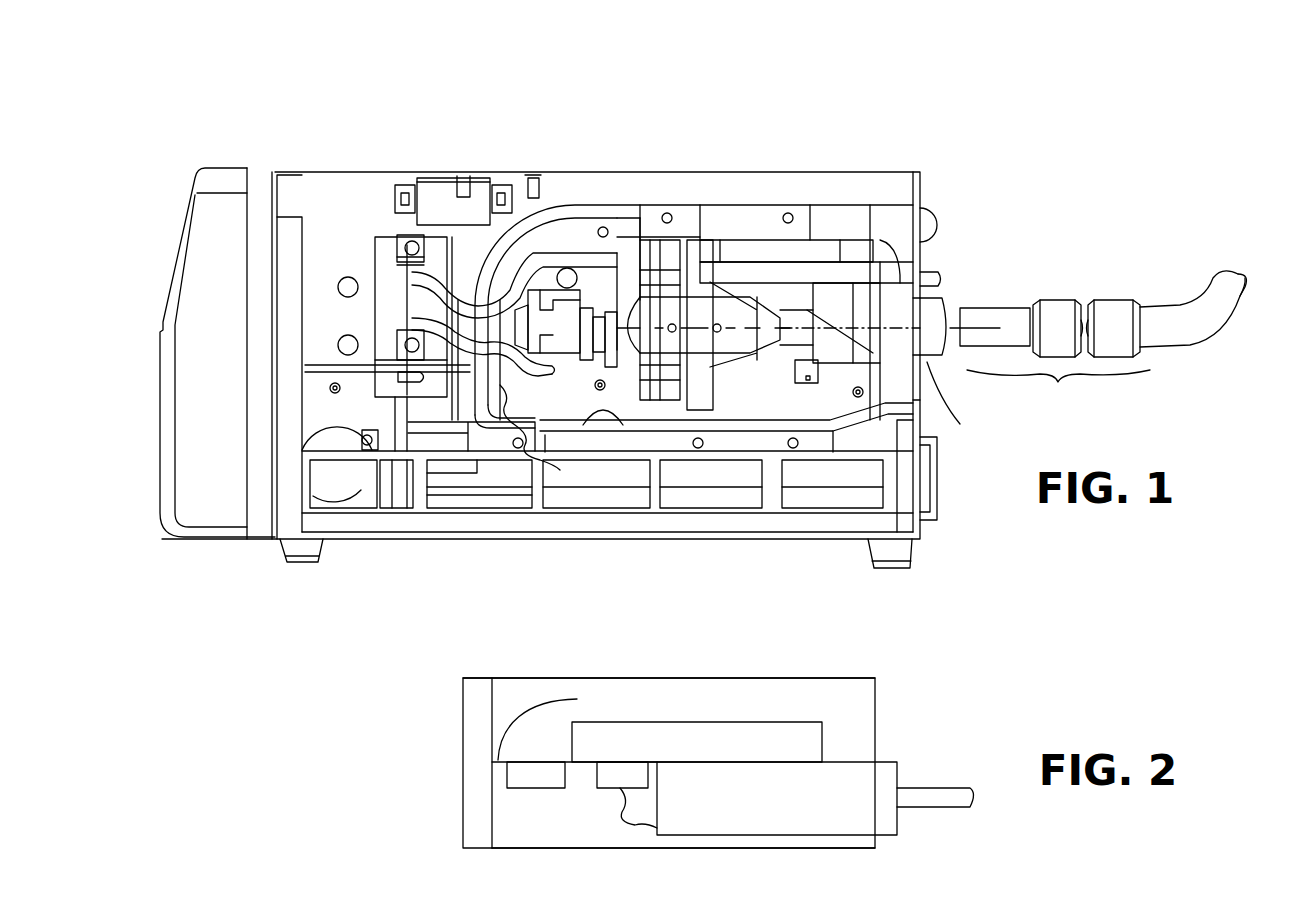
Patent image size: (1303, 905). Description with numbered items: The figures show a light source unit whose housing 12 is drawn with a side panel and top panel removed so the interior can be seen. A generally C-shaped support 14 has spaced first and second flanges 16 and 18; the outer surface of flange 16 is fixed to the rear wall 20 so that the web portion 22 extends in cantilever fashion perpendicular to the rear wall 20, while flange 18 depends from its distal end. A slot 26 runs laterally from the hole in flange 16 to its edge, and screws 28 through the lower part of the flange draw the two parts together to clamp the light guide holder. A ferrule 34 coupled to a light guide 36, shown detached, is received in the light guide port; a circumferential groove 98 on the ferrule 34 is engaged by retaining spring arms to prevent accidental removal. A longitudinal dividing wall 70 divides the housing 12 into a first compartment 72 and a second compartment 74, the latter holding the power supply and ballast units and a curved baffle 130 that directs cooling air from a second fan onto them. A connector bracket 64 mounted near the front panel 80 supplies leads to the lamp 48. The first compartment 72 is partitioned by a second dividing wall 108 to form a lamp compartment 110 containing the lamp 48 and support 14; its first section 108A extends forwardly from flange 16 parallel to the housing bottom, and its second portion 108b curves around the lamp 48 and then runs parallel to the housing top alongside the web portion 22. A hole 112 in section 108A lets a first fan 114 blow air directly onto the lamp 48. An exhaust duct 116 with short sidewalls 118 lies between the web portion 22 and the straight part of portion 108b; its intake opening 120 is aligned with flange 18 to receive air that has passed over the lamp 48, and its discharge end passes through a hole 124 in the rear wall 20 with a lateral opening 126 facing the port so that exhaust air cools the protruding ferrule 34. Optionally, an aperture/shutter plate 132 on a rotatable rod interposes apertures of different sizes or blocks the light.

In FIG. 1, the housing 12 is at (498, 543).
In FIG. 2, the housing 12 is at (863, 678).
In FIG. 1, the support 14 is at (923, 278).
In FIG. 1, the first flange 16 is at (893, 310).
In FIG. 1, the second flange 18 is at (707, 283).
In FIG. 1, the rear wall 20 is at (923, 405).
In FIG. 1, the web portion 22 is at (830, 273).
In FIG. 1, the slot 26 is at (960, 424).
In FIG. 1, the screws 28 is at (855, 395).
In FIG. 1, the ferrule 34 is at (1058, 394).
In FIG. 1, the light guide 36 is at (1190, 352).
In FIG. 1, the lamp 48 is at (633, 320).
In FIG. 2, the connector bracket 64 is at (622, 770).
In FIG. 1, the longitudinal dividing wall 70 is at (335, 195).
In FIG. 2, the longitudinal dividing wall 70 is at (583, 763).
In FIG. 2, the first compartment 72 is at (600, 837).
In FIG. 2, the second compartment 74 is at (725, 700).
In FIG. 1, the front panel 80 is at (160, 520).
In FIG. 2, the front panel 80 is at (477, 837).
In FIG. 1, the circumferential groove 98 is at (1088, 300).
In FIG. 1, the second dividing wall 108 is at (588, 205).
In FIG. 1, the first section of dividing wall 108A is at (857, 430).
In FIG. 1, the second portion of dividing wall 108b is at (483, 217).
In FIG. 1, the lamp compartment 110 is at (563, 213).
In FIG. 1, the hole 112 is at (590, 405).
In FIG. 1, the first fan 114 is at (612, 443).
In FIG. 1, the exhaust duct 116 is at (777, 250).
In FIG. 1, the short sidewalls 118 is at (890, 220).
In FIG. 1, the intake opening 120 is at (658, 273).
In FIG. 1, the hole in rear wall 124 is at (945, 275).
In FIG. 1, the lateral opening 126 is at (940, 258).
In FIG. 2, the curved baffle 130 is at (557, 700).
In FIG. 1, the plate 132 is at (785, 383).